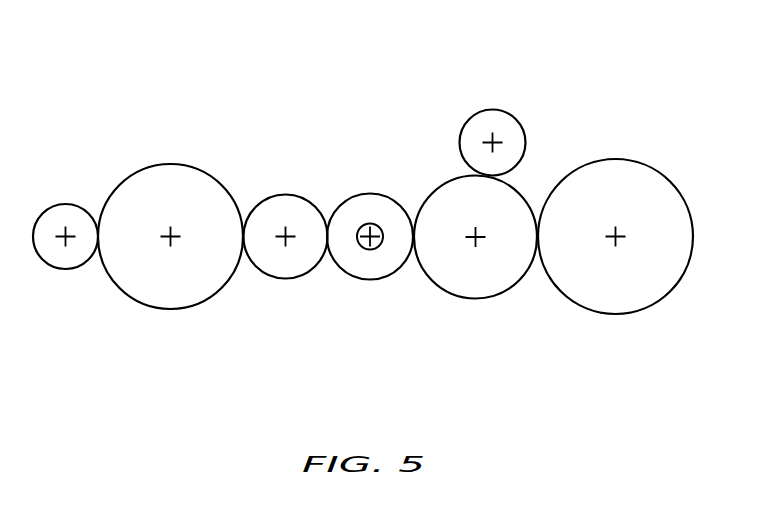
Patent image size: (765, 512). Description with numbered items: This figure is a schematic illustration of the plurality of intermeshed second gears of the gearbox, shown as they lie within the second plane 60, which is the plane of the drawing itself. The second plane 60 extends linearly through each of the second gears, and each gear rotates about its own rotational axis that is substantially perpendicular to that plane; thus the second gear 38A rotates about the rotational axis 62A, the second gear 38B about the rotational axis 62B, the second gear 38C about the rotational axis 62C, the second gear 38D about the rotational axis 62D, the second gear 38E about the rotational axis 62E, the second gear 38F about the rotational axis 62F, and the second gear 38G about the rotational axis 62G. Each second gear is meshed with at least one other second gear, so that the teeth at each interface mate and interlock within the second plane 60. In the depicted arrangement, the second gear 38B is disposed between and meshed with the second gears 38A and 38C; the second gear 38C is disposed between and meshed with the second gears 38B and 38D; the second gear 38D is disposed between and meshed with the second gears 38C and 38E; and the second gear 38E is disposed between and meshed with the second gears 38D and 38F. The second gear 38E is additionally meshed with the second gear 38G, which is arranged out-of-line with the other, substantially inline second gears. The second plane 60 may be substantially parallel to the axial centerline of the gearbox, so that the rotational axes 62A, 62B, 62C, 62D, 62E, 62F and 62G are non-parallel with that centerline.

The second plane 60 is at (83, 50).
The second gear 38A is at (57, 270).
The second gear 38B is at (166, 310).
The second gear 38C is at (295, 281).
The second gear 38D is at (372, 281).
The second gear 38E is at (482, 300).
The second gear 38F is at (618, 313).
The second gear 38G is at (503, 112).
The rotational axis 62A is at (66, 235).
The rotational axis 62B is at (171, 235).
The rotational axis 62C is at (286, 236).
The rotational axis 62D is at (371, 238).
The rotational axis 62E is at (483, 237).
The rotational axis 62F is at (617, 237).
The rotational axis 62G is at (492, 143).